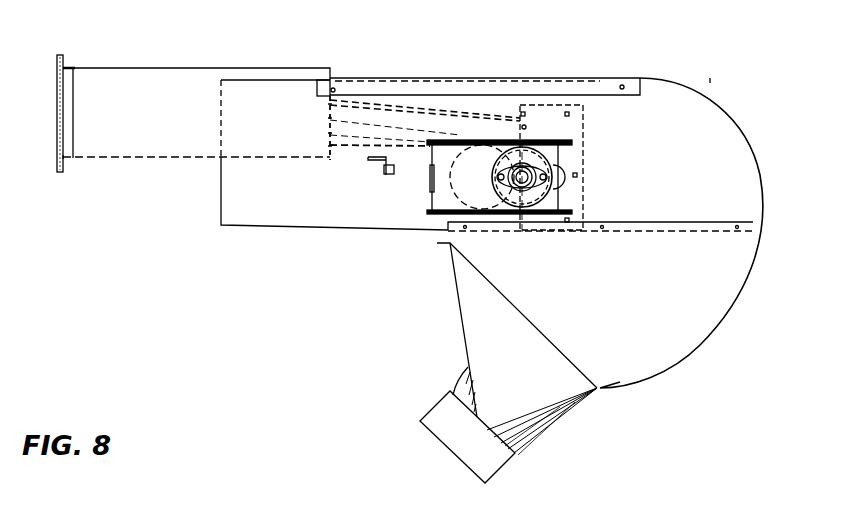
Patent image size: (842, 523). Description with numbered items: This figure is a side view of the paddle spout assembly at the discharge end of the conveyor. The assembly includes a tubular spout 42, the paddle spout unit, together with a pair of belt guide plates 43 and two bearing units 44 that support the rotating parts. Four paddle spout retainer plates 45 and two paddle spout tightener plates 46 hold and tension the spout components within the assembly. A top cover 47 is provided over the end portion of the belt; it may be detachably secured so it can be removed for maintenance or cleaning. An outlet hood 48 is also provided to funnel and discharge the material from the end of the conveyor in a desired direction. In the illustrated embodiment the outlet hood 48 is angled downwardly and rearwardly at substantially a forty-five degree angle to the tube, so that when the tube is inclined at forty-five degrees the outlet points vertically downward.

The tubular spout 42 is at (100, 78).
The belt guide plates 43 is at (567, 104).
The bearing units 44 is at (538, 182).
The paddle spout retainer plates 45 is at (460, 142).
The paddle spout tightener plates 46 is at (430, 177).
The top cover 47 is at (595, 88).
The outlet hood 48 is at (718, 308).